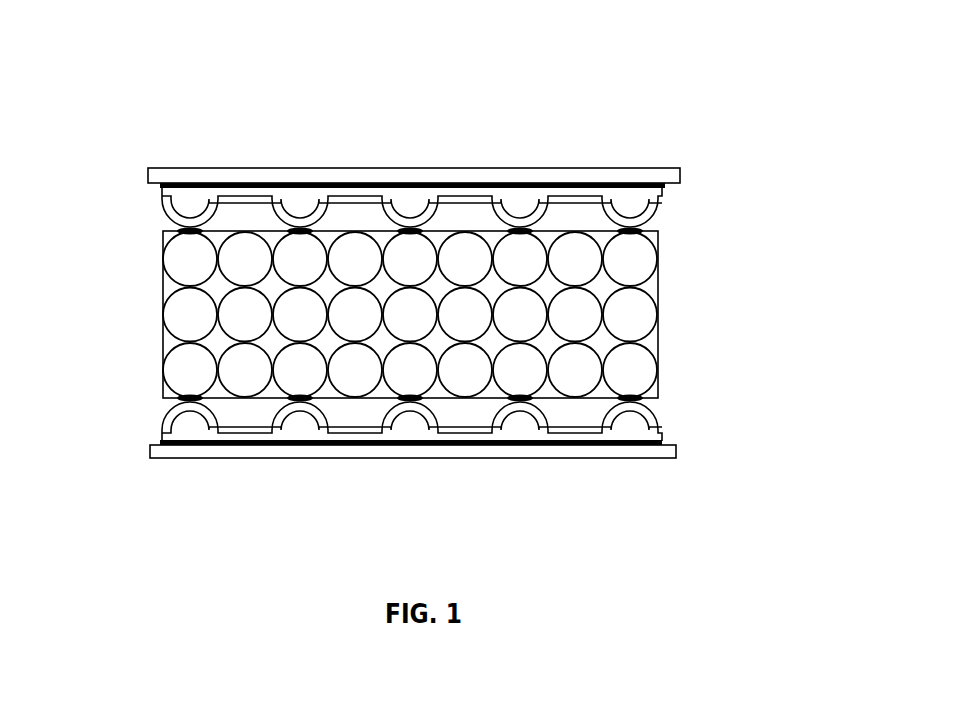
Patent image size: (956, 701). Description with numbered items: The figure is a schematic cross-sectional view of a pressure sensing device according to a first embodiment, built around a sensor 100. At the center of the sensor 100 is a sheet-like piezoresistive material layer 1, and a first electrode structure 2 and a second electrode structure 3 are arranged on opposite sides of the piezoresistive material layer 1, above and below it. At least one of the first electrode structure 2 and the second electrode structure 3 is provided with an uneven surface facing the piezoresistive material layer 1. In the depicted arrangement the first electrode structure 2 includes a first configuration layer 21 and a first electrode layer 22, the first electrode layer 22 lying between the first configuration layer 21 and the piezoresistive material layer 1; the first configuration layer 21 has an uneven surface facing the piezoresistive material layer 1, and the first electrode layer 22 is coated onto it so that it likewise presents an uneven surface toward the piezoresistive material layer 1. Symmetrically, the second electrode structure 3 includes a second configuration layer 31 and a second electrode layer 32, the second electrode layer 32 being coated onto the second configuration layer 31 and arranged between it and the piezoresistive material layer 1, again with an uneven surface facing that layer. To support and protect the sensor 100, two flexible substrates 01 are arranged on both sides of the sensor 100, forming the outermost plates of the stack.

The sensor 100 is at (790, 43).
The flexible substrate 01 is at (530, 178).
The piezoresistive material layer 1 is at (190, 320).
The first electrode structure 2 is at (162, 199).
The first configuration layer 21 is at (662, 185).
The first electrode layer 22 is at (633, 220).
The second electrode structure 3 is at (160, 428).
The second configuration layer 31 is at (672, 450).
The second electrode layer 32 is at (633, 408).